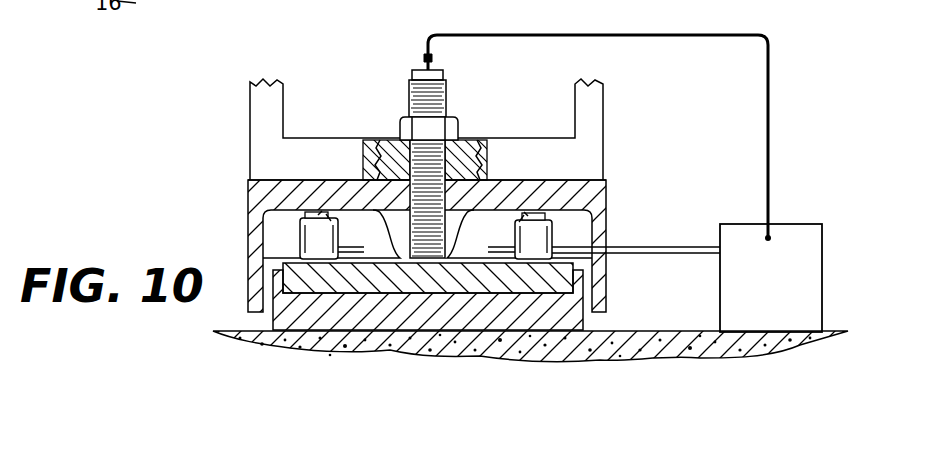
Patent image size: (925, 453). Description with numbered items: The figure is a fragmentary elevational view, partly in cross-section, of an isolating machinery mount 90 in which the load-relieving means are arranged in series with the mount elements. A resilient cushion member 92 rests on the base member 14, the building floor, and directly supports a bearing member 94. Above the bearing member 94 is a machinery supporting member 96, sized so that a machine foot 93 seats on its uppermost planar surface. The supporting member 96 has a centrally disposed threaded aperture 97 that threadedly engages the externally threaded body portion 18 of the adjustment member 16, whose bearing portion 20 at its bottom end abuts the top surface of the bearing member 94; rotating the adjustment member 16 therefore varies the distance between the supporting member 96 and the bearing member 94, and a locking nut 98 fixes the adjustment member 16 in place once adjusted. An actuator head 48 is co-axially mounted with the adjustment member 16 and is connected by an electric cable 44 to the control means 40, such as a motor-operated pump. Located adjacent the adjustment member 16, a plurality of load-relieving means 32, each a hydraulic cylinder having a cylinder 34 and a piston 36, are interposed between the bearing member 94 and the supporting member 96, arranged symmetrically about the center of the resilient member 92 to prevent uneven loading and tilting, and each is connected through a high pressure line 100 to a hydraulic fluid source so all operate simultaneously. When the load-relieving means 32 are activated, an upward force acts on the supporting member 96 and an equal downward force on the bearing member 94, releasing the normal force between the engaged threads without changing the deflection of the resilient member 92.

The base member 14 is at (836, 332).
The adjustment member 16 is at (398, 94).
The externally threaded body portion 18 is at (445, 81).
The bearing portion 20 is at (427, 234).
The load-relieving means 32 is at (290, 238).
The cylinder 34 is at (322, 214).
The piston 36 is at (306, 216).
The control means 40 is at (822, 226).
The electric cable 44 is at (636, 34).
The actuator head 48 is at (414, 50).
The isolating machinery mount 90 is at (238, 195).
The resilient cushion member 92 is at (273, 322).
The machine foot 93 is at (250, 112).
The bearing member 94 is at (283, 261).
The machinery supporting member 96 is at (247, 181).
The threaded aperture 97 is at (397, 140).
The locking nut 98 is at (453, 117).
The high pressure line 100 is at (655, 257).